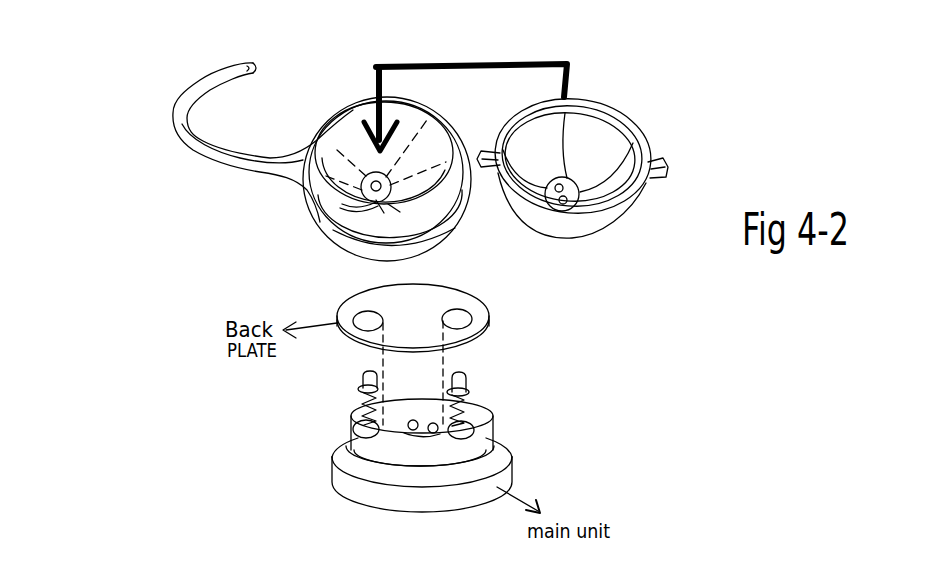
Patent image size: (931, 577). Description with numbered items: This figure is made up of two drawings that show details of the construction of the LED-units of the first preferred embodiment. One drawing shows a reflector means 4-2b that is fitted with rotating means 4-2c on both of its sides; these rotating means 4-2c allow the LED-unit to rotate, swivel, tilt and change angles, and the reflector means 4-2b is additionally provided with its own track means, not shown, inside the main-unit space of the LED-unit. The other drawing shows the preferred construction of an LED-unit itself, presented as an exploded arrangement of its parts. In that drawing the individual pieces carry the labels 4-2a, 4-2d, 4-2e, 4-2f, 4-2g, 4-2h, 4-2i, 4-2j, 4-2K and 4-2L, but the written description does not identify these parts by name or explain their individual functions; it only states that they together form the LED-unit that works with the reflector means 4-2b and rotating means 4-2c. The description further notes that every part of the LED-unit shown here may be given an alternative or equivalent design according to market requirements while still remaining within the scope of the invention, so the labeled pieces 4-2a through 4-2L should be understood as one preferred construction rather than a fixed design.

The cup body 4-2a is at (597, 222).
The reflector means 4-2b is at (618, 114).
The rotating means 4-2c is at (657, 163).
The eyecup 4-2d is at (350, 232).
The band / back plate 4-2e is at (220, 158).
The contact means 4-2f is at (470, 378).
The resilient conductive means 4-2g is at (467, 407).
The electric pole 4-2h is at (475, 433).
The main unit top face 4-2i is at (425, 465).
The main unit inner ring 4-2j is at (382, 473).
The main unit housing 4-2K is at (337, 462).
The back plate hole 4-2L is at (465, 320).